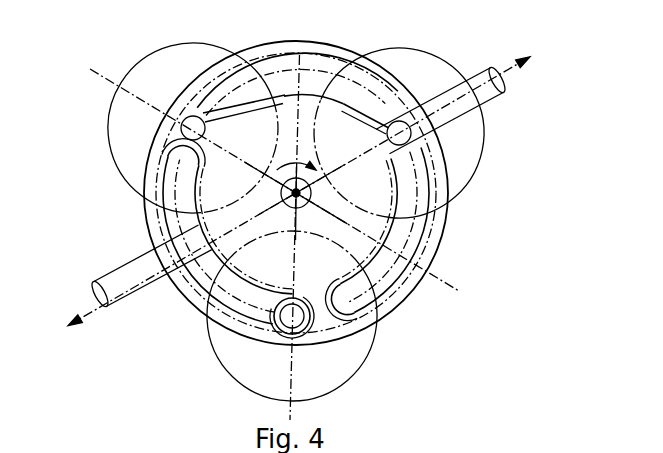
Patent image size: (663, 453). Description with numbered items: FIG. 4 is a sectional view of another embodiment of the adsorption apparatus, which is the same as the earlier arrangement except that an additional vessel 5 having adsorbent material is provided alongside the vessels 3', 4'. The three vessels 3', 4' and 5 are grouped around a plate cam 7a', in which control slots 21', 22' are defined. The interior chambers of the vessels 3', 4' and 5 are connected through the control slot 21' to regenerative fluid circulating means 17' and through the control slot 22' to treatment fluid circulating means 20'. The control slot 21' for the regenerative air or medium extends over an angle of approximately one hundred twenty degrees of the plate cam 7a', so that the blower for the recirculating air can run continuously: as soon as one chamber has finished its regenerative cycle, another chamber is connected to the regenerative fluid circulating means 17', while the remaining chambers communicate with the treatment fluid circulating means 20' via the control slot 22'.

The vessel 3' is at (163, 128).
The additional vessel 5 is at (463, 145).
The vessel 4' is at (361, 316).
The plate cam 7a' is at (337, 193).
The control slot 21' is at (178, 238).
The control slot 22' is at (431, 234).
The regenerative fluid circulating means 17' is at (285, 191).
The treatment fluid circulating means 20' is at (460, 105).